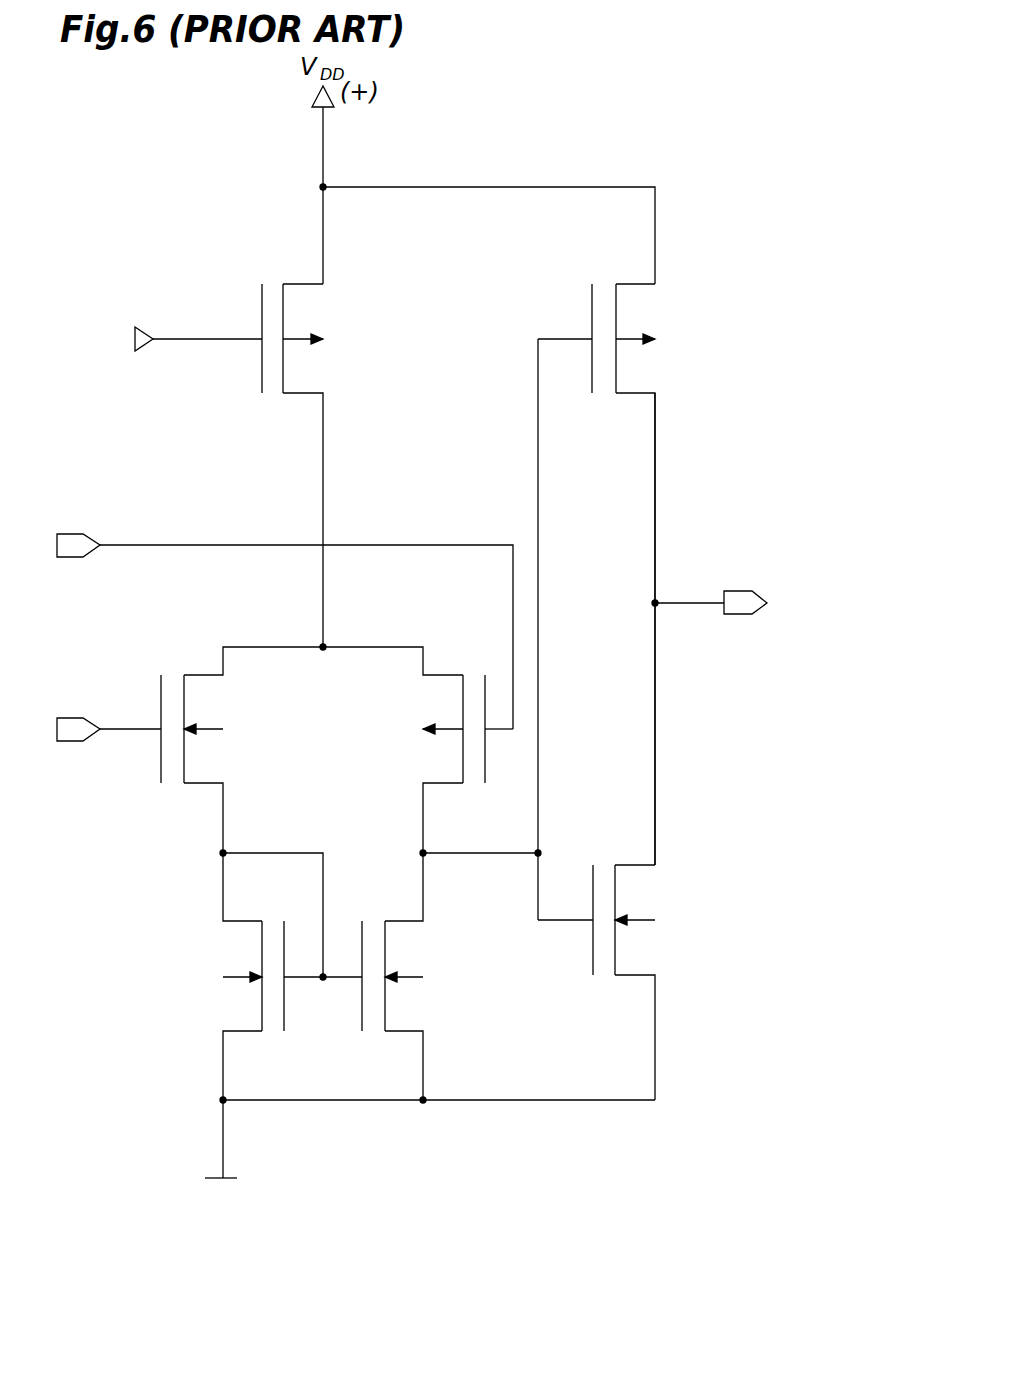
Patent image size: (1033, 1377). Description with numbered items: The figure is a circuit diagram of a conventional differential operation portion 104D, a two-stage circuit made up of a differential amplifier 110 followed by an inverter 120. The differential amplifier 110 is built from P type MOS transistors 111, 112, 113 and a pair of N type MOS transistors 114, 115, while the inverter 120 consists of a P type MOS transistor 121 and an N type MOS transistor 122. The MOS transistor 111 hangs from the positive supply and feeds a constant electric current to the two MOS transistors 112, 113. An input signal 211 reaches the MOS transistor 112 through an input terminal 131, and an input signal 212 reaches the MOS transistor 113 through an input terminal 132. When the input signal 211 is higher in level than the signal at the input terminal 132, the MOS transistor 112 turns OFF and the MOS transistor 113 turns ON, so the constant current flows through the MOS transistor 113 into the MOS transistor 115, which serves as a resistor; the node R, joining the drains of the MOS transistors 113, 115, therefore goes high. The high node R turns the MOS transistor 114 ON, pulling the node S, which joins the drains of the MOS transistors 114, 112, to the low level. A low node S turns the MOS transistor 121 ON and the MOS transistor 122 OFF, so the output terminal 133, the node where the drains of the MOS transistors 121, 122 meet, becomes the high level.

The differential operation portion 104D is at (508, 157).
The differential amplifier 110 is at (308, 1124).
The P type MOS transistor 111 is at (310, 305).
The P type MOS transistor 112 is at (446, 763).
The P type MOS transistor 113 is at (193, 707).
The N type MOS transistor 114 is at (410, 1005).
The N type MOS transistor 115 is at (233, 1005).
The inverter 120 is at (563, 1128).
The P type MOS transistor 121 is at (632, 312).
The N type MOS transistor 122 is at (633, 892).
The input terminal 131 is at (72, 534).
The input terminal 132 is at (70, 742).
The output terminal 133 is at (734, 591).
The input signal 211 is at (136, 545).
The input signal 212 is at (131, 729).
The node S is at (423, 853).
The node R is at (223, 853).